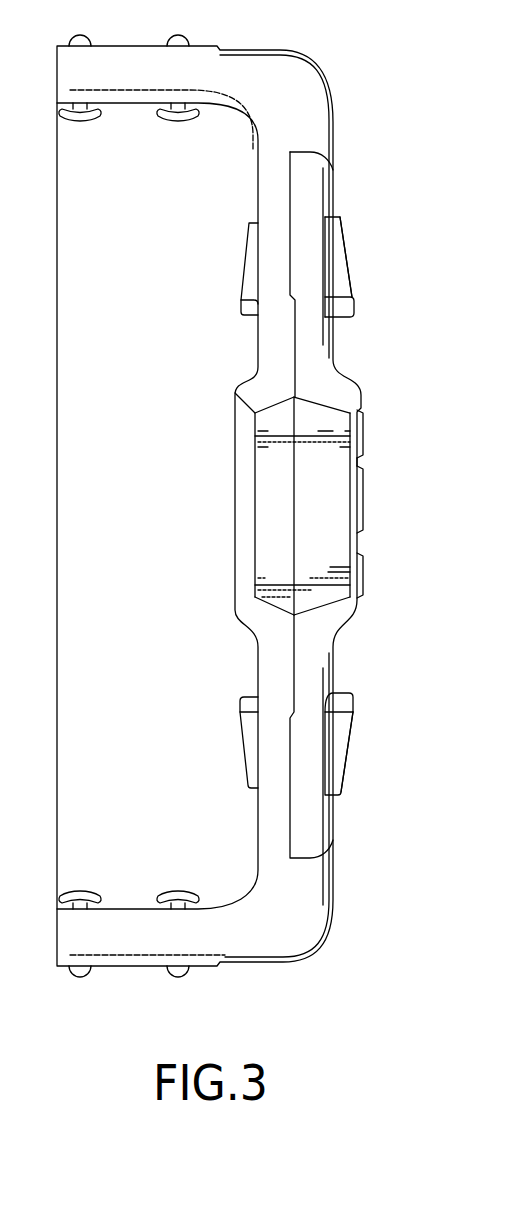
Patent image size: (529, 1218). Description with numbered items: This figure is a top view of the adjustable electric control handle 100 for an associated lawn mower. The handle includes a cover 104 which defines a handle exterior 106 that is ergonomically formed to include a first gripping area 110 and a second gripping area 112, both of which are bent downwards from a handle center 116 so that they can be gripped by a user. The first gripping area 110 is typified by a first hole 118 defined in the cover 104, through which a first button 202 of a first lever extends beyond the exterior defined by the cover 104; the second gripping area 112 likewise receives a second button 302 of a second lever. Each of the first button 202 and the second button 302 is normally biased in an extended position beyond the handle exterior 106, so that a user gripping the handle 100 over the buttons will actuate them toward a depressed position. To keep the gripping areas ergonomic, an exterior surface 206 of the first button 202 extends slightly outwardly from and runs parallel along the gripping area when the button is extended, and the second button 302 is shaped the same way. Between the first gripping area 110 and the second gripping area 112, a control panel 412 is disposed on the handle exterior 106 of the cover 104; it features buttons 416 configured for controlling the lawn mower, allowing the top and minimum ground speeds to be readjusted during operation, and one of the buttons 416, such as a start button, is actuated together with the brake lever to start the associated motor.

The adjustable electric control handle 100 is at (153, 592).
The cover 104 is at (317, 590).
The handle exterior 106 is at (287, 115).
The first gripping area 110 is at (368, 777).
The second gripping area 112 is at (350, 140).
The handle center 116 is at (223, 467).
The first hole 118 is at (327, 255).
The first button 202 is at (338, 272).
The exterior surface of the first button 206 is at (354, 296).
The second button 302 is at (252, 275).
The control panel 412 is at (357, 465).
The buttons 416 is at (363, 432).